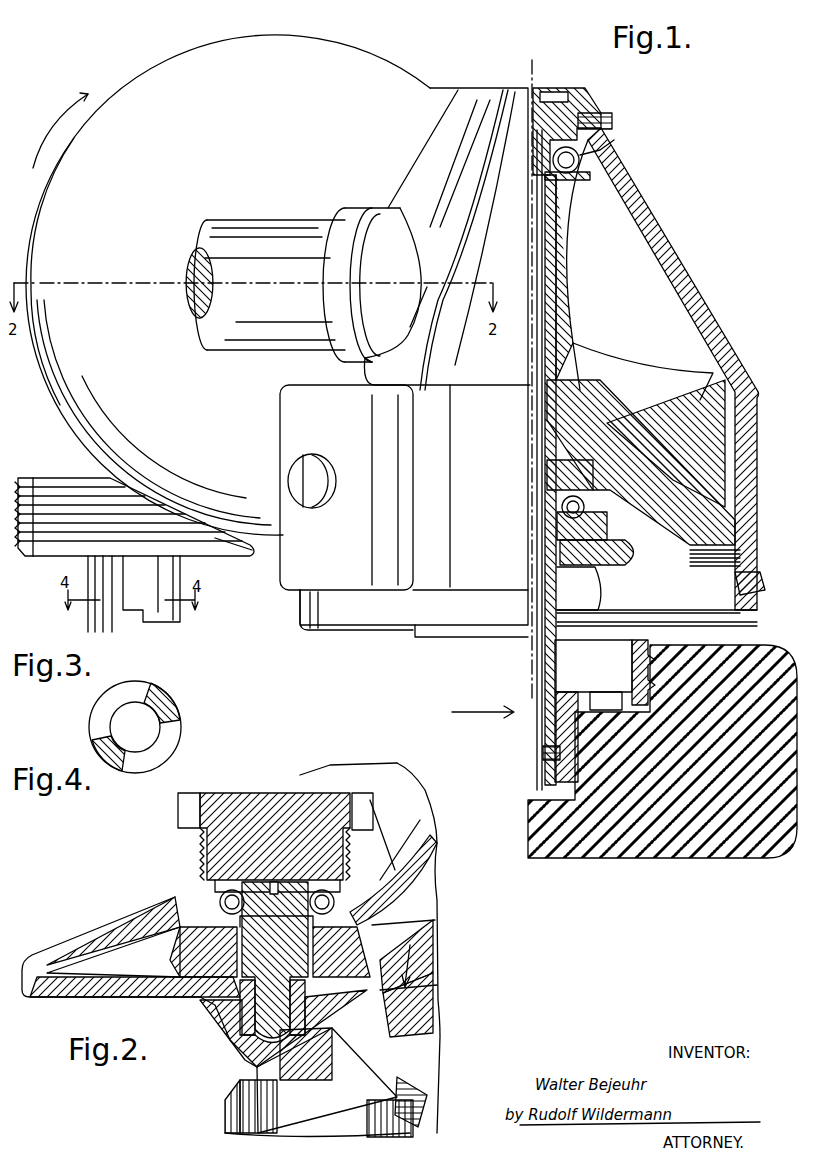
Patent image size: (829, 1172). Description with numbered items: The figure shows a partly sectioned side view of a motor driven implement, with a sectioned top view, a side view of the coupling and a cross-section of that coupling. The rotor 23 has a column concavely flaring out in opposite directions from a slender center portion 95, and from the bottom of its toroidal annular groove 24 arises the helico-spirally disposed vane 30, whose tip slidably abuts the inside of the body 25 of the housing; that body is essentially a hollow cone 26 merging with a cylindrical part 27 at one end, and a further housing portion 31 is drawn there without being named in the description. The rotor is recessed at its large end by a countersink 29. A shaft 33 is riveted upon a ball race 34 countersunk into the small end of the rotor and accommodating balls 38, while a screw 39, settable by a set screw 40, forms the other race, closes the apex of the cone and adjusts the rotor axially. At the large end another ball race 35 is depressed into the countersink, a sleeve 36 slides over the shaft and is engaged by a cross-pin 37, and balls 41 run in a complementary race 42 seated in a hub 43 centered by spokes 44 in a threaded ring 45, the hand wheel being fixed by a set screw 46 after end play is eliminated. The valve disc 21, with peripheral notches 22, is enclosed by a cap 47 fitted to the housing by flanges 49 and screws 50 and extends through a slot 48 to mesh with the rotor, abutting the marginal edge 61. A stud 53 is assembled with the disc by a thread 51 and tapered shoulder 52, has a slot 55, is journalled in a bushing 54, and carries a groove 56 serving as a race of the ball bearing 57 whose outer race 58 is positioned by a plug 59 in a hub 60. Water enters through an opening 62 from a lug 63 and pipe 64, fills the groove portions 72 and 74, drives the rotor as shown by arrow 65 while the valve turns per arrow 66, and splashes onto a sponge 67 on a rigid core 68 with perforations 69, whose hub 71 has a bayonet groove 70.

In FIG. 2, the valve disc 21 is at (157, 947).
In FIG. 2, the notches 22 is at (104, 963).
In FIG. 2, the rotor 23 is at (415, 890).
In FIG. 1, the toroidal annular groove 24 is at (592, 190).
In FIG. 1, the body of the housing 25 is at (672, 235).
In FIG. 2, the body of the housing 25 is at (430, 1105).
In FIG. 1, the hollow cone 26 is at (690, 278).
In FIG. 1, the cylindrical part 27 is at (728, 442).
In FIG. 2, the cylindrical part 27 is at (340, 1050).
In FIG. 1, the countersink 29 is at (562, 500).
In FIG. 1, the vane 30 is at (735, 400).
In FIG. 2, the vane 30 is at (437, 953).
In FIG. 1, the lower wall 31 is at (735, 515).
In FIG. 2, the lower wall 31 is at (437, 1012).
In FIG. 1, the shaft 33 is at (537, 222).
In FIG. 1, the ball race 34 is at (545, 176).
In FIG. 1, the ball race 35 is at (550, 480).
In FIG. 1, the sleeve 36 is at (545, 596).
In FIG. 1, the cross-pin 37 is at (543, 754).
In FIG. 1, the balls 38 is at (600, 150).
In FIG. 1, the screw 39 is at (553, 97).
In FIG. 1, the set screw 40 is at (612, 121).
In FIG. 1, the balls 41 is at (570, 512).
In FIG. 1, the complementary race 42 is at (560, 530).
In FIG. 1, the hub 43 is at (570, 555).
In FIG. 1, the spokes 44 is at (575, 578).
In FIG. 1, the threaded ring 45 is at (740, 555).
In FIG. 1, the set screw 46 is at (760, 592).
In FIG. 1, the cap 47 is at (228, 285).
In FIG. 2, the cap 47 is at (78, 938).
In FIG. 2, the slot 48 is at (420, 918).
In FIG. 1, the flanges 49 is at (405, 362).
In FIG. 2, the flanges 49 is at (425, 1133).
In FIG. 1, the screws 50 is at (322, 500).
In FIG. 2, the thread 51 is at (179, 1012).
In FIG. 2, the tapered shoulder 52 is at (200, 962).
In FIG. 2, the stud 53 is at (255, 1010).
In FIG. 2, the bushing 54 is at (238, 1040).
In FIG. 2, the slot 55 is at (280, 845).
In FIG. 2, the groove 56 is at (178, 915).
In FIG. 2, the ball bearing 57 is at (215, 888).
In FIG. 2, the outer race 58 is at (215, 880).
In FIG. 2, the plug 59 is at (232, 808).
In FIG. 2, the hub 60 is at (198, 832).
In FIG. 2, the marginal edge 61 is at (361, 1015).
In FIG. 2, the opening 62 is at (380, 1028).
In FIG. 1, the lug 63 is at (360, 205).
In FIG. 2, the lug 63 is at (262, 1070).
In FIG. 1, the pipe 64 is at (232, 216).
In FIG. 2, the pipe 64 is at (240, 1120).
In FIG. 1, the arrow 65 is at (483, 704).
In FIG. 2, the arrow 65 is at (401, 974).
In FIG. 1, the arrow 66 is at (60, 130).
In FIG. 1, the sponge 67 is at (735, 860).
In FIG. 1, the rigid core 68 is at (222, 563).
In FIG. 4, the rigid core 68 is at (120, 768).
In FIG. 1, the perforations 69 is at (616, 698).
In FIG. 1, the groove 70 is at (151, 589).
In FIG. 4, the groove 70 is at (115, 700).
In FIG. 1, the hub 71 is at (95, 570).
In FIG. 4, the hub 71 is at (170, 700).
In FIG. 1, the portion of the groove 72 is at (631, 325).
In FIG. 1, the third portion of the groove 74 is at (641, 462).
In FIG. 1, the slender center portion 95 is at (565, 290).